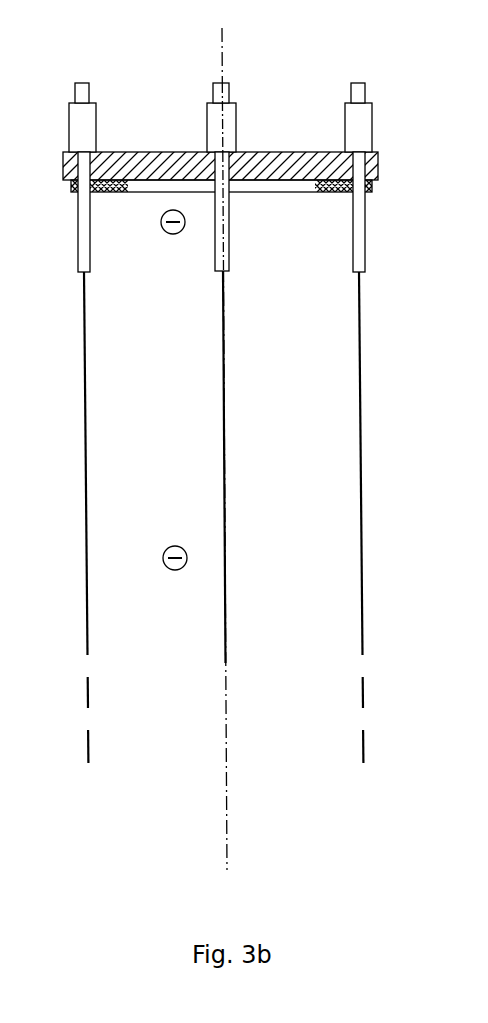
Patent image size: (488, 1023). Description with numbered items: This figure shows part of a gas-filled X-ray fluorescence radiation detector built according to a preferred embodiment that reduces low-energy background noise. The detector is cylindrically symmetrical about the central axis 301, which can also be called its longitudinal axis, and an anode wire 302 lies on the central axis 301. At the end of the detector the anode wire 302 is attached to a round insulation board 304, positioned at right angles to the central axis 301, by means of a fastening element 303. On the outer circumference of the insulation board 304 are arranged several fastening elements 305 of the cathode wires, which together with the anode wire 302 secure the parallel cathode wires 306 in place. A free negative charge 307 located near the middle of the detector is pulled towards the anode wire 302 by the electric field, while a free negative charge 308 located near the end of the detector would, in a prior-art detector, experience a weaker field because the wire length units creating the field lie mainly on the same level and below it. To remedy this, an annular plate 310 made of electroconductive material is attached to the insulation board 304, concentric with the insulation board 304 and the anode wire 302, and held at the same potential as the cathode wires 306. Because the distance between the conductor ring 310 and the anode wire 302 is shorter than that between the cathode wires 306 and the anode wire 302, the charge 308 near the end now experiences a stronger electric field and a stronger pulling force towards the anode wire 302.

The central axis 301 is at (221, 60).
The anode wire 302 is at (224, 386).
The fastening element 303 is at (237, 118).
The insulation board 304 is at (278, 152).
The fastening elements of the cathode wires 305 is at (97, 120).
The cathode wires 306 is at (85, 384).
The free negative charge 307 is at (166, 568).
The free negative charge 308 is at (165, 232).
The annular plate 310 is at (70, 192).